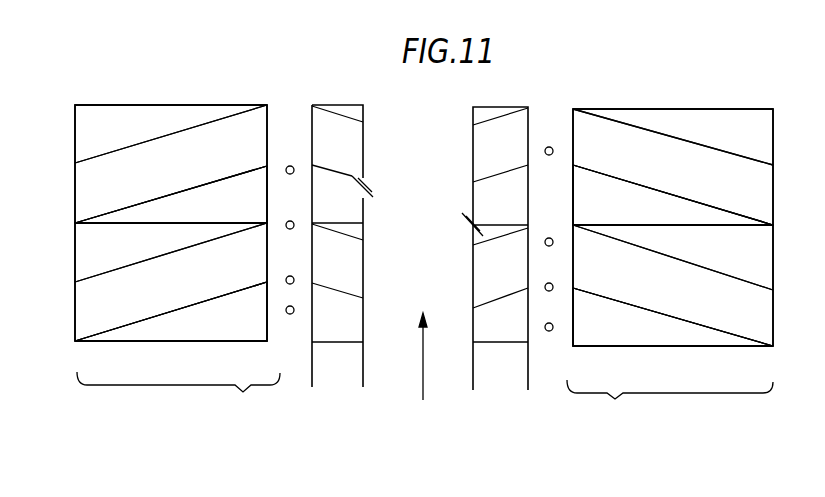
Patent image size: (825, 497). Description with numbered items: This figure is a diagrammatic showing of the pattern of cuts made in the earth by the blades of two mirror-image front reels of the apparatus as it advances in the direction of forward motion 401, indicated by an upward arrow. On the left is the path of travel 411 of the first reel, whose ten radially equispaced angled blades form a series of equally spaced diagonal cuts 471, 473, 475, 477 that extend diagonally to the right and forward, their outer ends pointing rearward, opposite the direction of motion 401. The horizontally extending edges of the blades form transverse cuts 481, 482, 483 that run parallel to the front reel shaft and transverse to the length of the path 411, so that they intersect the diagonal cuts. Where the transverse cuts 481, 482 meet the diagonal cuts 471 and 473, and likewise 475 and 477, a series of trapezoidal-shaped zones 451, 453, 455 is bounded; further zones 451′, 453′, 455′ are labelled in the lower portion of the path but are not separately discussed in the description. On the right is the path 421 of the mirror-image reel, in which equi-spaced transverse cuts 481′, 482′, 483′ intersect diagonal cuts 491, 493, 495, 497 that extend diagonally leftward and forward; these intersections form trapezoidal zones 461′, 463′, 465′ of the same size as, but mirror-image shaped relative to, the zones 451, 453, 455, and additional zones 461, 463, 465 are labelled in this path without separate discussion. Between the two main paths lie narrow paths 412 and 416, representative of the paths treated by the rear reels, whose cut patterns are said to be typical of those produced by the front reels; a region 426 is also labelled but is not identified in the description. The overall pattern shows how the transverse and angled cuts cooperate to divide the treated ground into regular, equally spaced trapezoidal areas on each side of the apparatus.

The direction of forward motion 401 is at (406, 363).
The path of travel 411 is at (177, 259).
The path 412 is at (346, 343).
The path 416 is at (514, 343).
The path 421 is at (303, 94).
The gap 426 is at (557, 120).
The trapezoidal-shaped zone 451 is at (86, 115).
The lower plate section 451′ is at (78, 241).
The trapezoidal-shaped zone 453 is at (128, 209).
The inclined channel 453′ is at (213, 279).
The trapezoidal-shaped zone 455 is at (248, 209).
The inclined channel 455′ is at (240, 336).
The upper plate section 461 is at (765, 138).
The trapezoidal zone 461′ is at (756, 257).
The inclined channel 463 is at (676, 154).
The trapezoidal zone 463′ is at (707, 312).
The inclined channel 465 is at (580, 215).
The trapezoidal zone 465′ is at (611, 334).
The diagonal cut 471 is at (96, 158).
The diagonal cut 473 is at (228, 176).
The diagonal cut 475 is at (148, 258).
The diagonal cut 477 is at (147, 318).
The transverse cut 481 is at (87, 104).
The transverse cut 481′ is at (755, 109).
The transverse cut 482 is at (204, 223).
The transverse cut 482′ is at (621, 225).
The transverse cut 483 is at (97, 342).
The transverse cut 483′ is at (618, 347).
The diagonal cut 491 is at (617, 118).
The diagonal cut 493 is at (745, 218).
The diagonal cut 495 is at (727, 259).
The diagonal cut 497 is at (605, 281).